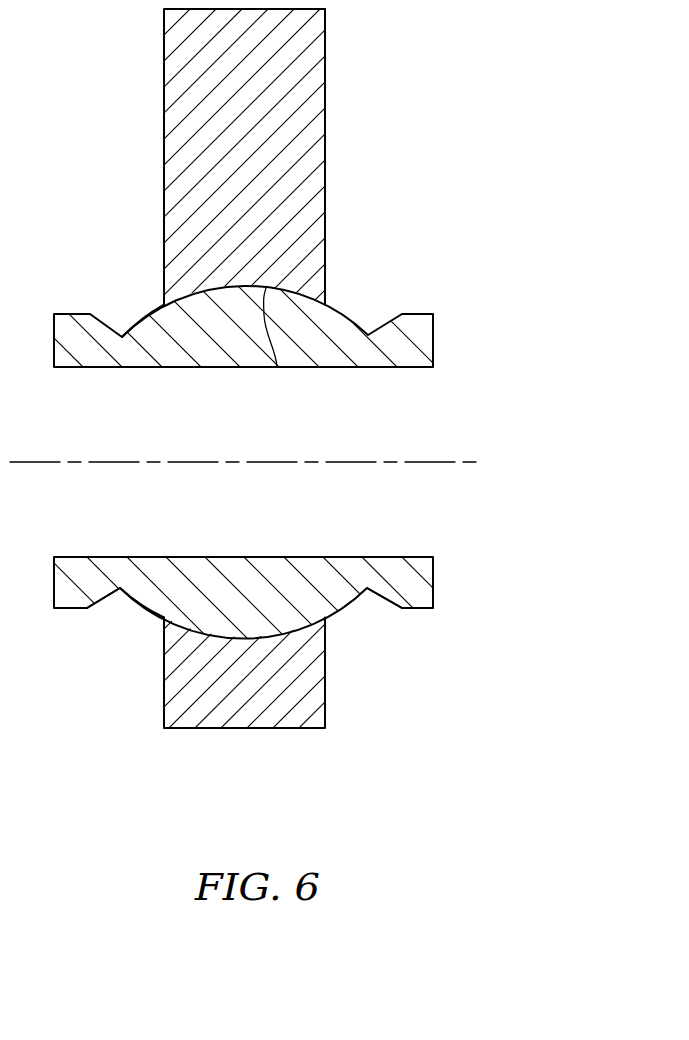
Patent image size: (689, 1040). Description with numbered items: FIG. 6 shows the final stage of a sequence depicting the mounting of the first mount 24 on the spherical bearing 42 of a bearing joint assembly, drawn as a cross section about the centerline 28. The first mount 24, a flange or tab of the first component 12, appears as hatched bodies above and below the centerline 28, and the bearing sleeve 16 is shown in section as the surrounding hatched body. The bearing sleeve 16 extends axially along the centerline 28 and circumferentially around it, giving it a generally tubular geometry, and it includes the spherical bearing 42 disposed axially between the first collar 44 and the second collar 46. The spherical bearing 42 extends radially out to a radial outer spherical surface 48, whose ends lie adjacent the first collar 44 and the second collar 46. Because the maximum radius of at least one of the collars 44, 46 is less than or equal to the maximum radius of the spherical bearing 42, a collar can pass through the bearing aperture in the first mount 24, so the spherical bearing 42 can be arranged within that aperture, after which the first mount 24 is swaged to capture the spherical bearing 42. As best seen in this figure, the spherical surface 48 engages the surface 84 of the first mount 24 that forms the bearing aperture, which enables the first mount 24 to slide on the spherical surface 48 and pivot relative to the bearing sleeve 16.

The first component 12 is at (340, 56).
The first mount 24 is at (327, 157).
The bearing sleeve 16 is at (394, 294).
The spherical surface 48 is at (148, 312).
The surface of the first mount 84 is at (277, 367).
The centerline 28 is at (458, 463).
The first collar 44 is at (72, 623).
The spherical bearing 42 is at (133, 623).
The second collar 46 is at (415, 633).